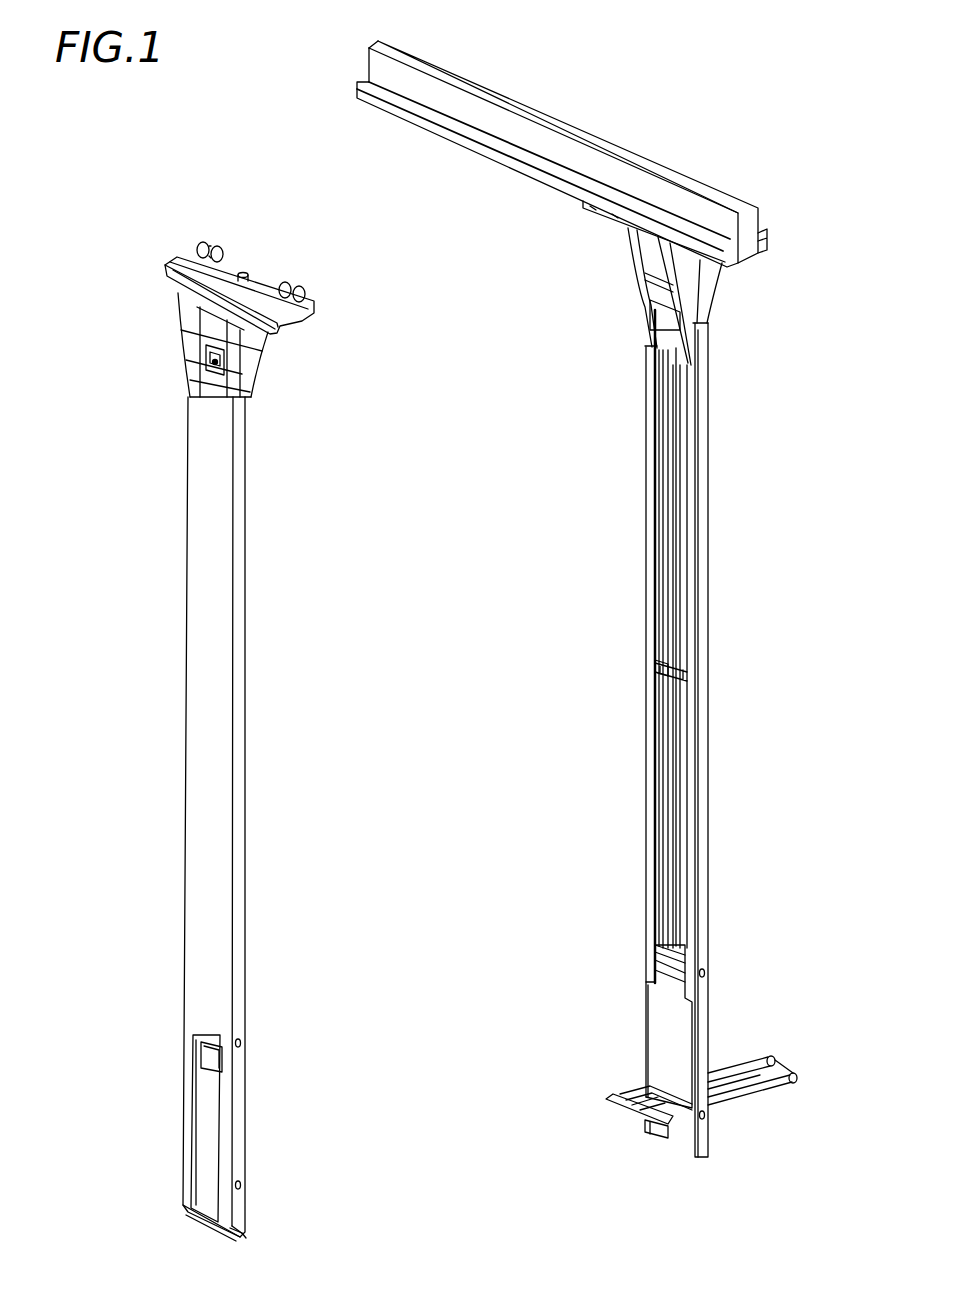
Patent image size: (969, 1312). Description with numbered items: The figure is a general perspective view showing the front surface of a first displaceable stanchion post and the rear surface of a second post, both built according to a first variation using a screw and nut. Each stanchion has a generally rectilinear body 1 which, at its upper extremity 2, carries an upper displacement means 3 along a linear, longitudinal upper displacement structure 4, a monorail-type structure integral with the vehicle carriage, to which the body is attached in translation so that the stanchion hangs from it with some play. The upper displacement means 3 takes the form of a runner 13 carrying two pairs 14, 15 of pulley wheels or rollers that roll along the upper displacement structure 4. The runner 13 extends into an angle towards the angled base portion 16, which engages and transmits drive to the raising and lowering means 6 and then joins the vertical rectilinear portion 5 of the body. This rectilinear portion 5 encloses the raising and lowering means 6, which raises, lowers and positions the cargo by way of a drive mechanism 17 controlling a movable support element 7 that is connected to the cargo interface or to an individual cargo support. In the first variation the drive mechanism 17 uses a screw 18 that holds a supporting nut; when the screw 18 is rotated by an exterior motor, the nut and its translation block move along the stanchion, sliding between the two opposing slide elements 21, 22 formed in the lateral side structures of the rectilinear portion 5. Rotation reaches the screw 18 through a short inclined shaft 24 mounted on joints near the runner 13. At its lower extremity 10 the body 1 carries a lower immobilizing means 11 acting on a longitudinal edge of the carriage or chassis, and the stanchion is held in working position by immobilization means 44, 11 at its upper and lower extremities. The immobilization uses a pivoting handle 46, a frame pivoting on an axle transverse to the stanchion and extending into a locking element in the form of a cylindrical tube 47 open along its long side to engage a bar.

The body 1 is at (93, 557).
The upper extremity 2 is at (160, 268).
The upper displacement means 3 is at (270, 260).
The upper displacement structure 4 is at (527, 96).
The rectilinear portion 5 is at (176, 770).
The raising and lowering means 6 is at (618, 676).
The movable support element 7 is at (656, 674).
The lower extremity 10 is at (158, 1103).
The lower immobilizing means 11 is at (176, 1152).
The runner 13 is at (243, 272).
The pair of pulley wheels or rollers 14 is at (200, 240).
The pair of pulley wheels or rollers 15 is at (313, 296).
The angled portion 16 is at (174, 352).
The drive mechanism 17 is at (270, 384).
The screw 18 is at (676, 582).
The slide element 21 is at (248, 978).
The slide element 22 is at (656, 845).
The inclined shaft 24 is at (225, 345).
The immobilization means 44 is at (731, 1125).
The pivoting handle 46 is at (641, 1135).
The cylindrical tube 47 is at (610, 1107).